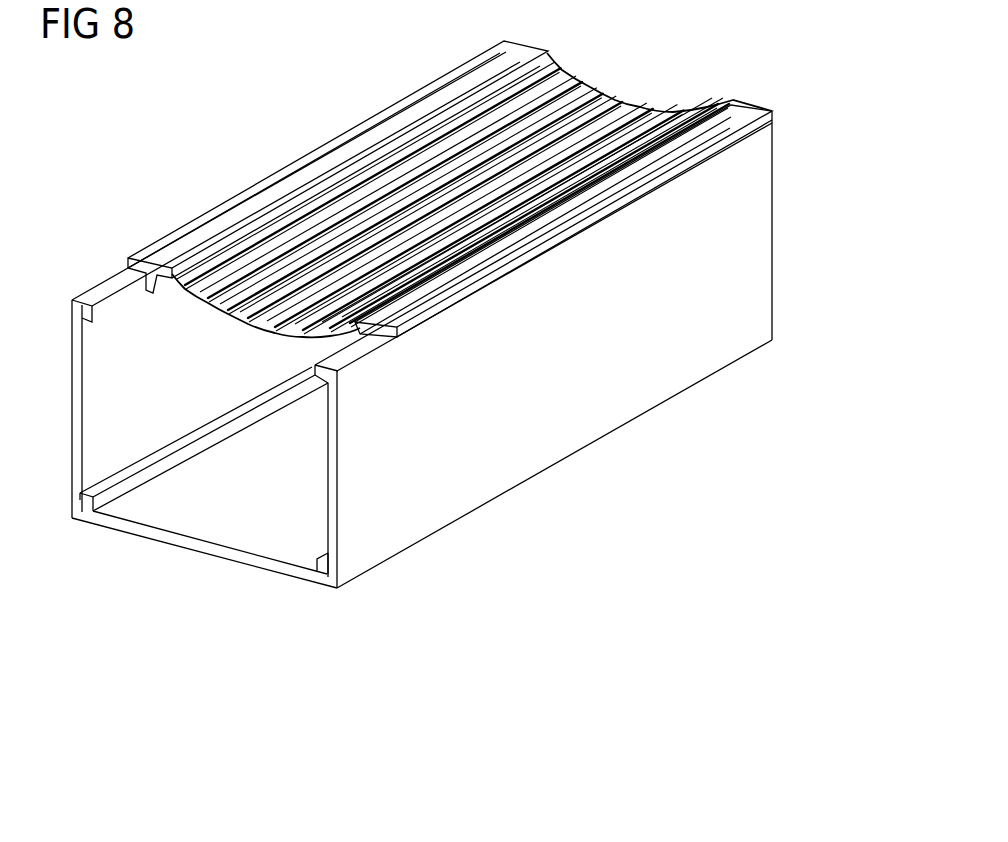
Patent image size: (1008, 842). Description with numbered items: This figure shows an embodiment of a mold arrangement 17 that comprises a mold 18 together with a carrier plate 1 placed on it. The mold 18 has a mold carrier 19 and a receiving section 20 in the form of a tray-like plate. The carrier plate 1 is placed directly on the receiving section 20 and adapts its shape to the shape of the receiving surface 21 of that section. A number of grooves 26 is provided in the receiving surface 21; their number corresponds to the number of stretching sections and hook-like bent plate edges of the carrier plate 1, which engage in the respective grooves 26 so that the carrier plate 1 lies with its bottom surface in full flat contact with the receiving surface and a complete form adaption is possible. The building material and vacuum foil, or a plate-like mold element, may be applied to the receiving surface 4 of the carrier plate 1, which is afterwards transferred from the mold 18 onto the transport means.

The carrier plate 1 is at (477, 294).
The receiving surface 4 is at (431, 186).
The mold arrangement 17 is at (477, 320).
The mold 18 is at (669, 454).
The mold carrier 19 is at (437, 520).
The receiving section 20 is at (178, 250).
The receiving surface 21 is at (450, 186).
The grooves 26 is at (212, 318).